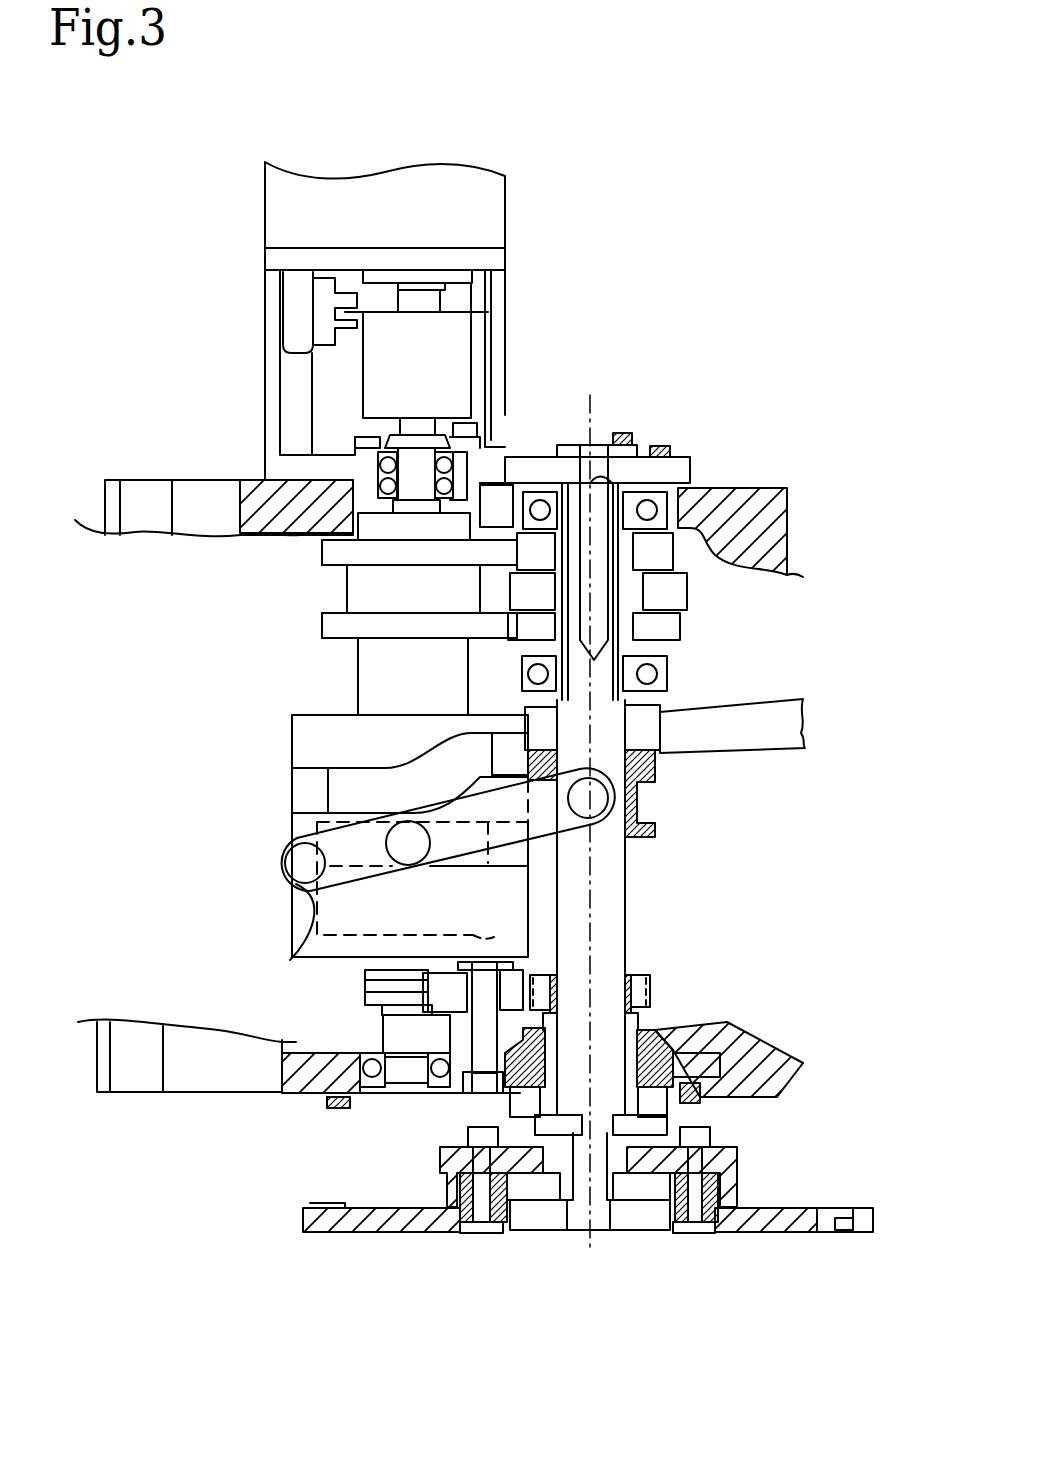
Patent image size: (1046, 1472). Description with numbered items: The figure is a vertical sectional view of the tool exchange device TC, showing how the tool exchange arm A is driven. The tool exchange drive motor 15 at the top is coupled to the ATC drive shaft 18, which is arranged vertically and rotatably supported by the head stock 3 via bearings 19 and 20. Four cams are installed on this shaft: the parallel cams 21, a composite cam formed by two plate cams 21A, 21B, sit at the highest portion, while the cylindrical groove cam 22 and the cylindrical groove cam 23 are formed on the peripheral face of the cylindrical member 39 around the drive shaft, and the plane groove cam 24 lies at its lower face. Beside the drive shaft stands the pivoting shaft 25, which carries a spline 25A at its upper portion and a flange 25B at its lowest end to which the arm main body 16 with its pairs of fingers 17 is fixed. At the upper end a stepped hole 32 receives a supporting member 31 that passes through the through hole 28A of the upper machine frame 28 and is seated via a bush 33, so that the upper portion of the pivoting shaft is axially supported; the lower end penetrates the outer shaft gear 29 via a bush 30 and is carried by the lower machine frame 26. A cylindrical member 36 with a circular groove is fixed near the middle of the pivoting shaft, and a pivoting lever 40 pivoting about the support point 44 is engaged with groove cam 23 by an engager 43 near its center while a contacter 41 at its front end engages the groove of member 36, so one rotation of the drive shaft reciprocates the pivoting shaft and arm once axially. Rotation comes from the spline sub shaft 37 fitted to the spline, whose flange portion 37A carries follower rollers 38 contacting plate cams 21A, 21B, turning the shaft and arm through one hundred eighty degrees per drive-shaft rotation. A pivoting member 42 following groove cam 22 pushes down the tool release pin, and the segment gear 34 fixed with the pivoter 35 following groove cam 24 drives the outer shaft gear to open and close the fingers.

The tool exchange device TC is at (175, 332).
The head stock 3 is at (292, 1077).
The tool exchange drive motor 15 is at (497, 222).
The tool exchange arm main body 16 is at (737, 1170).
The pairs of fingers 17 is at (385, 1233).
The ATC drive shaft 18 is at (388, 430).
The bearing 19 is at (498, 455).
The bearing 20 is at (348, 1078).
The parallel cams 21 is at (252, 557).
The plate cam 21A is at (323, 548).
The plate cam 21B is at (323, 625).
The cylindrical groove cam 22 is at (298, 790).
The cylindrical groove cam 23 is at (315, 832).
The plane groove cam 24 is at (293, 950).
The pivoting shaft 25 is at (660, 896).
The spline 25A is at (562, 485).
The flange 25B is at (517, 1110).
The lower machine frame 26 is at (707, 1105).
The upper machine frame 28 is at (687, 482).
The through hole 28A is at (596, 540).
The outer shaft gear 29 is at (653, 990).
The bush 30 is at (627, 975).
The supporting member 31 is at (570, 443).
The stepped hole 32 is at (612, 472).
The bush 33 is at (622, 483).
The segment gear 34 is at (367, 992).
The pivoter 35 is at (497, 943).
The cylindrical member 36 is at (660, 763).
The spline sub shaft 37 is at (687, 473).
The flange portion 37A is at (687, 598).
The follower rollers 38 is at (673, 552).
The cylindrical member 39 is at (300, 713).
The pivoting lever 40 is at (330, 892).
The contacter 41 is at (620, 802).
The pivoting member 42 is at (782, 698).
The engager 43 is at (398, 862).
The support point 44 is at (286, 866).
The tool exchange arm A is at (527, 1278).